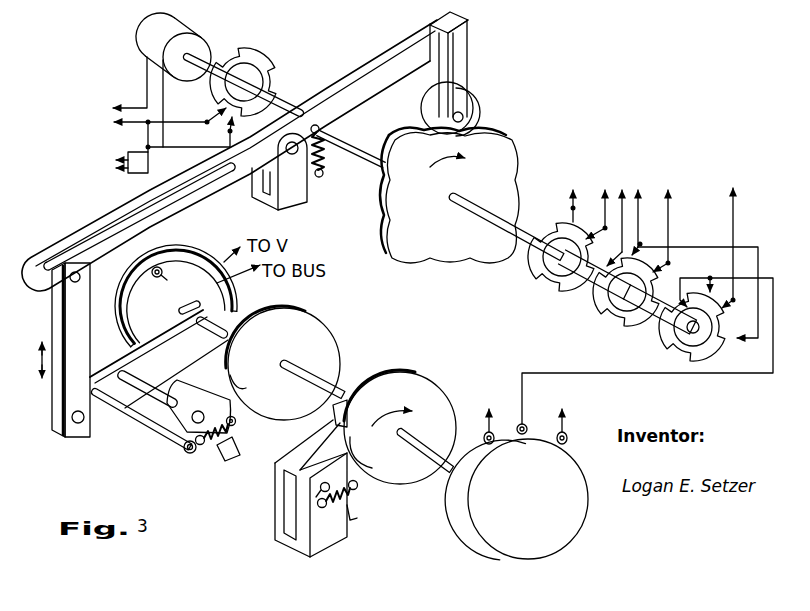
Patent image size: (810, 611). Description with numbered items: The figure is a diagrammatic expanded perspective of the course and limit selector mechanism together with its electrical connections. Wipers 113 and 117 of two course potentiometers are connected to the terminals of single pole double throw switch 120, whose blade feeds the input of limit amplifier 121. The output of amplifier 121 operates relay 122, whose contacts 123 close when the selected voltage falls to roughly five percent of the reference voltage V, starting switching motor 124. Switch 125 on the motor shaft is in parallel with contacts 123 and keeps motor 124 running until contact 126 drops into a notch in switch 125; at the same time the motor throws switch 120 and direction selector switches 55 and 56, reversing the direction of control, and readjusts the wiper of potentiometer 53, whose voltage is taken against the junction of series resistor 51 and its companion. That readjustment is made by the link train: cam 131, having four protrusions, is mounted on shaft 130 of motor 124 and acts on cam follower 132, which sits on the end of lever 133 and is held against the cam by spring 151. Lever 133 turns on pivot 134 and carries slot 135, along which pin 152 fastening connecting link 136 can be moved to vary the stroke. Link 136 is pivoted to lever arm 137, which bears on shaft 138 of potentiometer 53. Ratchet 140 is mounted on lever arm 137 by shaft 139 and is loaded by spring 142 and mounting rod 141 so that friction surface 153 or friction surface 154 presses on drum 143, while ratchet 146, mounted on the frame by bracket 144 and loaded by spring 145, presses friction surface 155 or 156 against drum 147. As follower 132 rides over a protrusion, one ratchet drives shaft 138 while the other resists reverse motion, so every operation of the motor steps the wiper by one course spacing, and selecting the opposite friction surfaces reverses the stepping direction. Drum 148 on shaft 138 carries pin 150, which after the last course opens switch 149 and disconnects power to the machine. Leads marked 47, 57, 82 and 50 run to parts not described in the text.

The potentiometer 53 is at (609, 418).
The direction selector switch 55 is at (639, 297).
The direction selector switch 56 is at (682, 327).
The single pole double throw switch 120 is at (570, 262).
The relay 122 is at (156, 163).
The relay contacts 123 is at (148, 128).
The switching motor 124 is at (220, 65).
The switch 125 is at (256, 81).
The contact 126 is at (228, 131).
The shaft 130 is at (346, 133).
The cam 131 is at (472, 195).
The cam follower 132 is at (465, 74).
The lever 133 is at (229, 155).
The pivot 134 is at (282, 172).
The slot 135 is at (139, 216).
The connecting link 136 is at (69, 350).
The lever arm 137 is at (159, 359).
The shaft 138 is at (355, 377).
The shaft 139 is at (157, 388).
The ratchet 140 is at (199, 406).
The mounting rod 141 is at (150, 430).
The spring 142 is at (222, 458).
The drum 143 is at (285, 363).
The bracket 144 is at (311, 505).
The spring 145 is at (355, 495).
The ratchet 146 is at (333, 471).
The drum 147 is at (400, 427).
The drum 148 is at (176, 302).
The switch 149 is at (202, 296).
The pin 150 is at (163, 280).
The spring 151 is at (335, 151).
The pin 152 is at (81, 277).
The friction surface 153 is at (254, 387).
The friction surface 154 is at (239, 434).
The friction surface 155 is at (364, 452).
The friction surface 156 is at (352, 515).
The wiper 113 is at (573, 178).
The limit amplifier 121 is at (333, 184).
The wiper 117 is at (619, 198).
The connection to 47 is at (692, 237).
The connection to 57 is at (665, 203).
The connection to 82 is at (733, 215).
The series resistor 51 is at (490, 392).
The connection to 50 is at (573, 406).